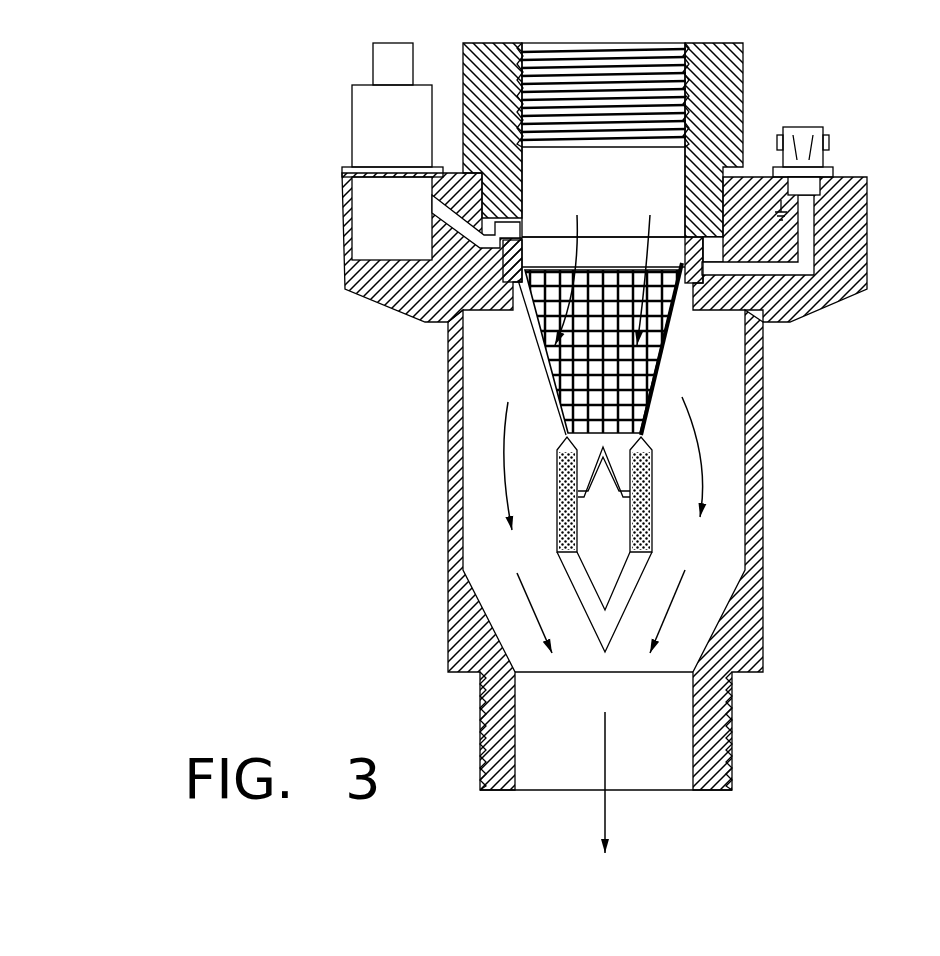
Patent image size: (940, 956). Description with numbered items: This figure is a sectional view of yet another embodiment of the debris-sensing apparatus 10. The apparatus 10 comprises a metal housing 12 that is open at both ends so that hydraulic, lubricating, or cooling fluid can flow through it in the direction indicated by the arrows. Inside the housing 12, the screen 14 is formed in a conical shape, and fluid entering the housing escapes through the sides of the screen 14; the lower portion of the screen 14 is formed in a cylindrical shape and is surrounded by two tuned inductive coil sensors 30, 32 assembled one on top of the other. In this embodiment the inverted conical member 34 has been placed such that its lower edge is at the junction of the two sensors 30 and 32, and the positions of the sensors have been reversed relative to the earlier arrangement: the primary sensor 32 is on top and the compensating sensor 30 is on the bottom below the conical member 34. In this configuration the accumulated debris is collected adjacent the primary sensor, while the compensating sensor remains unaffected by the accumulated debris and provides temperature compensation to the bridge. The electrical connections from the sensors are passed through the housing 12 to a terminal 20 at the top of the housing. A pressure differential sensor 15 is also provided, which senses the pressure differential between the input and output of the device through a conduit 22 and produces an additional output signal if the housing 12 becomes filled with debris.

The apparatus 10 is at (798, 548).
The metal housing 12 is at (733, 730).
The screen 14 is at (662, 367).
The pressure differential sensor 15 is at (380, 130).
The terminal 20 is at (807, 127).
The conduit 22 is at (522, 220).
The temperature compensating sensor 30 is at (552, 508).
The primary sensing coil 32 is at (552, 467).
The inverted conical member 34 is at (656, 450).